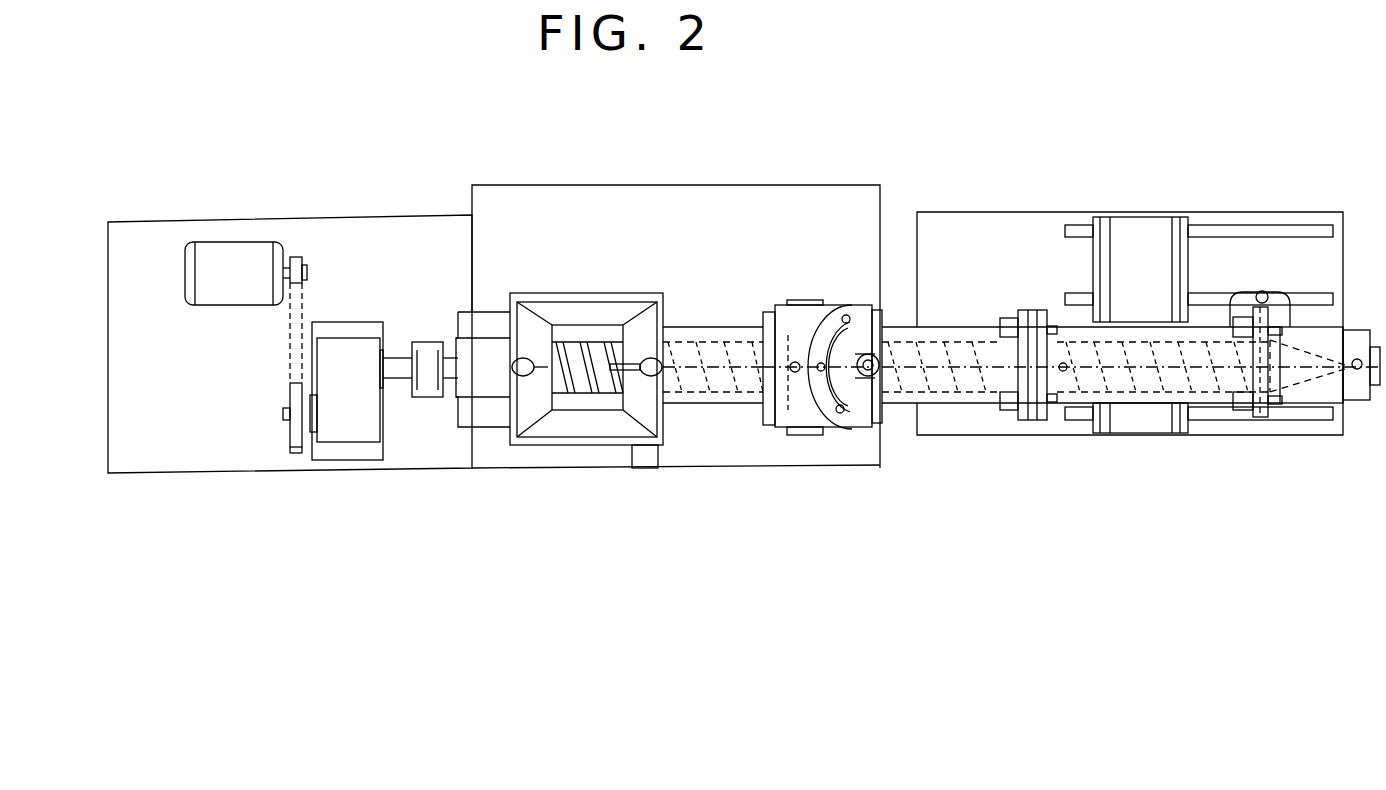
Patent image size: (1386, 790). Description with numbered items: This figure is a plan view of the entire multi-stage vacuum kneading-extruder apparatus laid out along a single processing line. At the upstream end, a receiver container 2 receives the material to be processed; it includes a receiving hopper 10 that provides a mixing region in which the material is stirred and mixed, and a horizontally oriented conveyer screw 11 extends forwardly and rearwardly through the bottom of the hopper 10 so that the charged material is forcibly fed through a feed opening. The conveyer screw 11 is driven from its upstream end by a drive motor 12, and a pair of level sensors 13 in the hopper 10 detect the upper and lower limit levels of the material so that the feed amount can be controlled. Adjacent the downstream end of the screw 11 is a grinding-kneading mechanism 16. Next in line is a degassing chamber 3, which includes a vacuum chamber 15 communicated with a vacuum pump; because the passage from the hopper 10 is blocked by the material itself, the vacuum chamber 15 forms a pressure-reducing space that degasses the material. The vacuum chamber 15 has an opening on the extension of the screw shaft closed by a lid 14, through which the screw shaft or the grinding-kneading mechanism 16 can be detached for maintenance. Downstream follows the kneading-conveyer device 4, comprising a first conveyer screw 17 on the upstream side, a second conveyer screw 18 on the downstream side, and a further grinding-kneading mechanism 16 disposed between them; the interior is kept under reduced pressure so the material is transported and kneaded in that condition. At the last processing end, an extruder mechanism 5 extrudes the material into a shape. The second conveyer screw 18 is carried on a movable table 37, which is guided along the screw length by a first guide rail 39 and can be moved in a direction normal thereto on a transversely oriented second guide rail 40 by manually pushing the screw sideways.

The receiver container 2 is at (565, 290).
The degassing chamber 3 is at (838, 295).
The kneading-conveyer device 4 is at (980, 310).
The extruder mechanism 5 is at (1297, 405).
The receiving hopper 10 is at (597, 310).
The conveyer screw 11 is at (706, 325).
The drive motor 12 is at (237, 247).
The level sensors 13 is at (500, 385).
The lid 14 is at (850, 398).
The vacuum chamber 15 is at (803, 418).
The grinding-kneading mechanism 16 is at (790, 322).
The first conveyer screw 17 is at (955, 412).
The second conveyer screw 18 is at (1218, 410).
The movable table 37 is at (1138, 410).
The first guide rail 39 is at (1305, 297).
The second guide rail 40 is at (1172, 245).